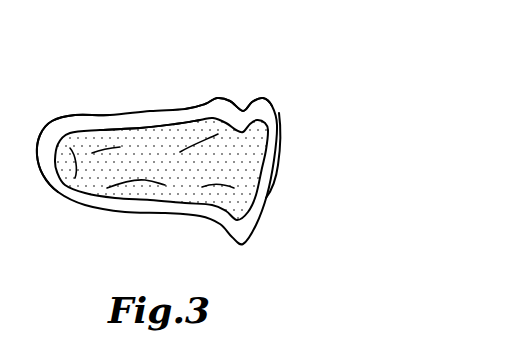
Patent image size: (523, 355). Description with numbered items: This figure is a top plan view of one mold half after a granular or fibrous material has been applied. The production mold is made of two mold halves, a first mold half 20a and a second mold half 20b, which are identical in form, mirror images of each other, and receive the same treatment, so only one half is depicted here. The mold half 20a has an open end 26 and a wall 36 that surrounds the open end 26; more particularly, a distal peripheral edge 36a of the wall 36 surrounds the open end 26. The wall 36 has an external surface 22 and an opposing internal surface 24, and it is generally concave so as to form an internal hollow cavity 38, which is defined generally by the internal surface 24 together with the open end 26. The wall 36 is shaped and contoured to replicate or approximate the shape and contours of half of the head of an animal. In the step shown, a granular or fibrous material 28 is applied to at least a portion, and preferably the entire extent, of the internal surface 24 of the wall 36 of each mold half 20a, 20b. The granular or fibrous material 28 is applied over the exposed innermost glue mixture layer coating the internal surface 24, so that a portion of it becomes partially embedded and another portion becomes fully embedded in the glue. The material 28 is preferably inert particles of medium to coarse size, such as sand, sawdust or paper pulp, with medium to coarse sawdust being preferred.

The first mold half 20a is at (249, 126).
The second mold half 20b is at (315, 72).
The external surface 22 is at (280, 155).
The internal surface 24 is at (279, 113).
The open end 26 is at (226, 118).
The granular or fibrous material 28 is at (218, 180).
The wall 36 is at (80, 130).
The distal peripheral edge 36a is at (172, 117).
The internal hollow cavity 38 is at (98, 147).